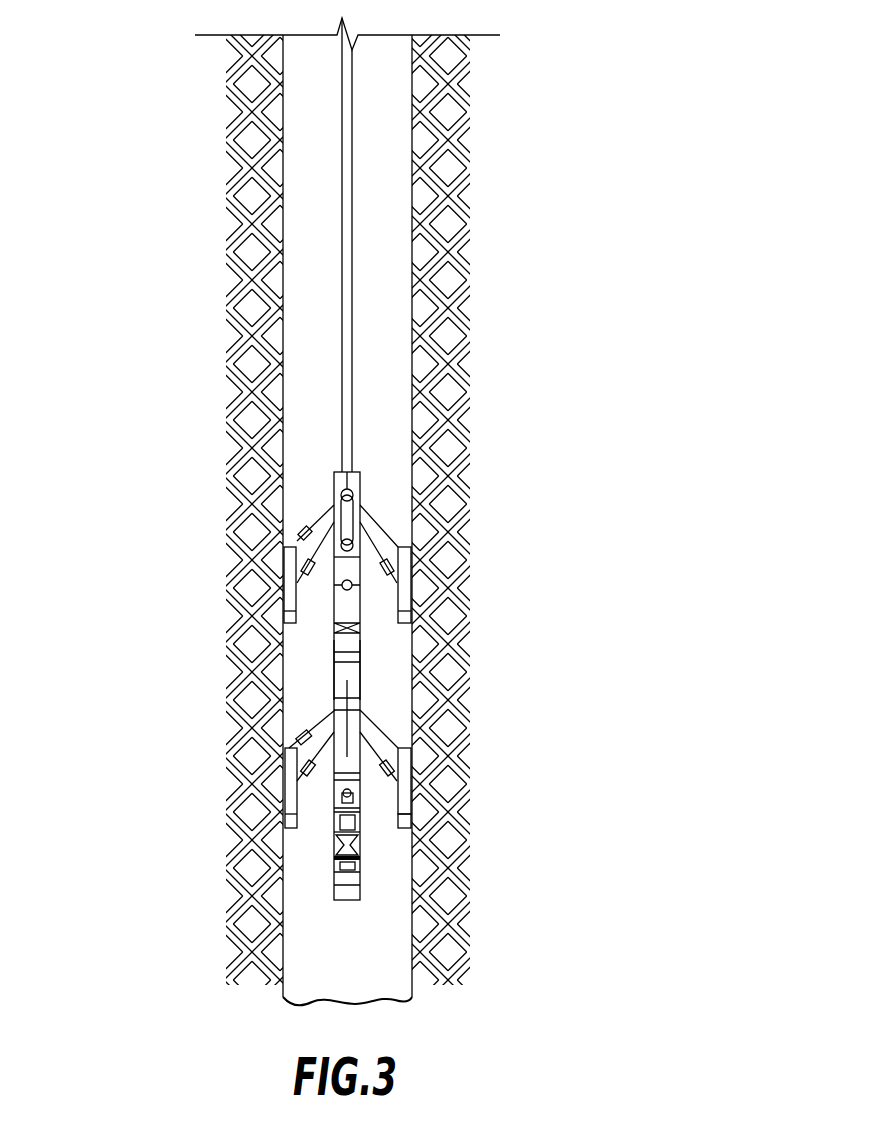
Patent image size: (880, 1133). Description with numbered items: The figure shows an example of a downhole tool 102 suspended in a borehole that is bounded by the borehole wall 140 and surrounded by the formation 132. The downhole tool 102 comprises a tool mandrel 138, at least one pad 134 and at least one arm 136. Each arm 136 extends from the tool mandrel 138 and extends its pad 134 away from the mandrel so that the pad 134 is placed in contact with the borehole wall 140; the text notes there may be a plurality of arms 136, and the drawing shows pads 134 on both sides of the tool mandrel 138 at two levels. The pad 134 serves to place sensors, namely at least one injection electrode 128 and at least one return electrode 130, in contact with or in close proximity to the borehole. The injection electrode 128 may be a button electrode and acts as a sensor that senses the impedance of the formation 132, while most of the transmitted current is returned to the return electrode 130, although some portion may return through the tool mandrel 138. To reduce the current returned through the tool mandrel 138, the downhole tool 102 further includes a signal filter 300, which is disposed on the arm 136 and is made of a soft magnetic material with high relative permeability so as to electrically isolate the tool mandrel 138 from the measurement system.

The downhole tool 102 is at (272, 597).
The borehole wall 140 is at (413, 98).
The formation 132 is at (396, 682).
The signal filter 300 is at (297, 517).
The pad 134 is at (442, 726).
The arm 136 is at (380, 728).
The tool mandrel 138 is at (360, 646).
The injection electrode 128 is at (413, 762).
The return electrode 130 is at (413, 808).